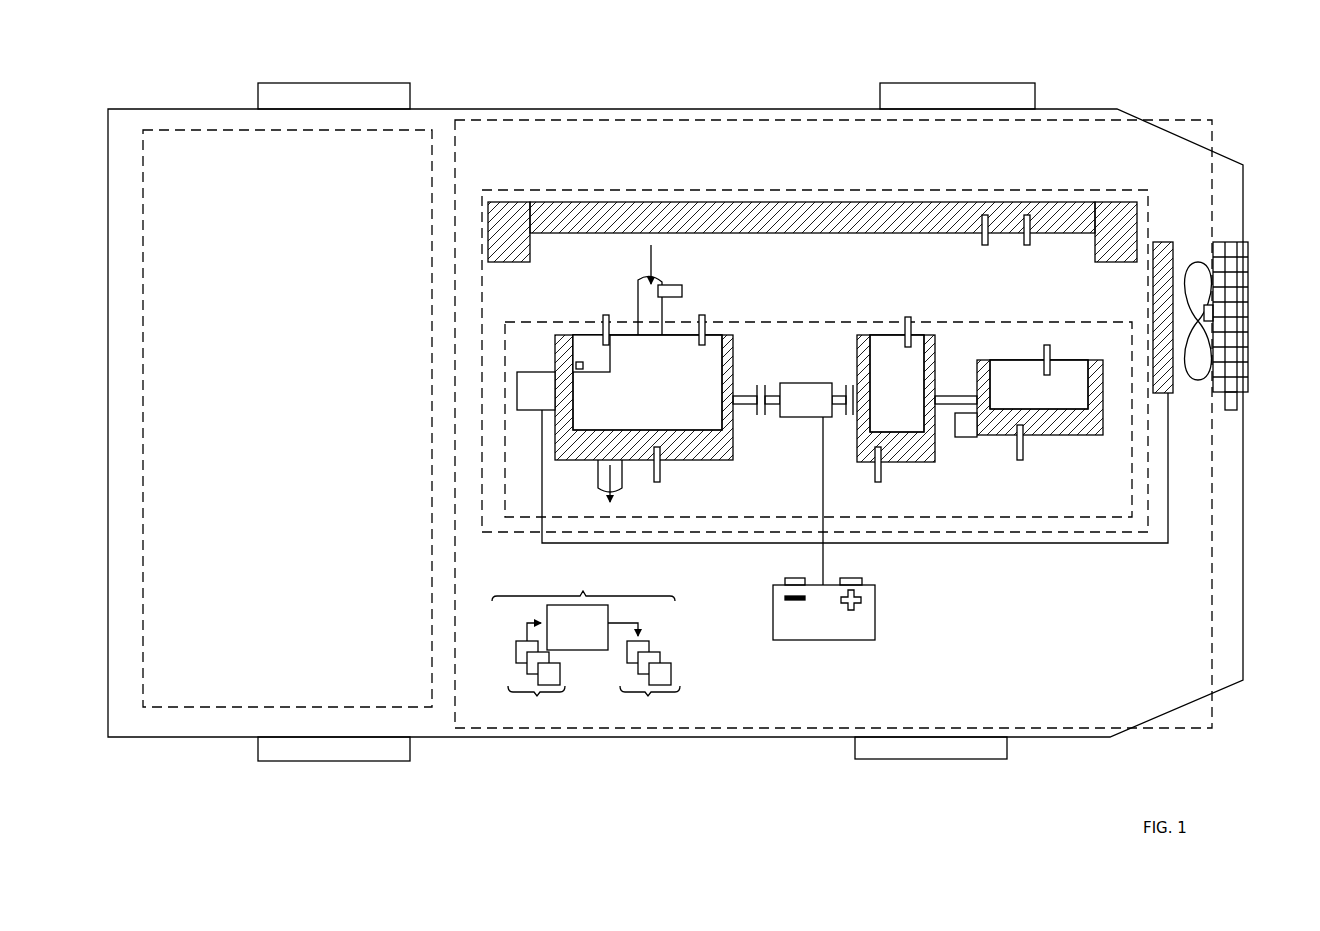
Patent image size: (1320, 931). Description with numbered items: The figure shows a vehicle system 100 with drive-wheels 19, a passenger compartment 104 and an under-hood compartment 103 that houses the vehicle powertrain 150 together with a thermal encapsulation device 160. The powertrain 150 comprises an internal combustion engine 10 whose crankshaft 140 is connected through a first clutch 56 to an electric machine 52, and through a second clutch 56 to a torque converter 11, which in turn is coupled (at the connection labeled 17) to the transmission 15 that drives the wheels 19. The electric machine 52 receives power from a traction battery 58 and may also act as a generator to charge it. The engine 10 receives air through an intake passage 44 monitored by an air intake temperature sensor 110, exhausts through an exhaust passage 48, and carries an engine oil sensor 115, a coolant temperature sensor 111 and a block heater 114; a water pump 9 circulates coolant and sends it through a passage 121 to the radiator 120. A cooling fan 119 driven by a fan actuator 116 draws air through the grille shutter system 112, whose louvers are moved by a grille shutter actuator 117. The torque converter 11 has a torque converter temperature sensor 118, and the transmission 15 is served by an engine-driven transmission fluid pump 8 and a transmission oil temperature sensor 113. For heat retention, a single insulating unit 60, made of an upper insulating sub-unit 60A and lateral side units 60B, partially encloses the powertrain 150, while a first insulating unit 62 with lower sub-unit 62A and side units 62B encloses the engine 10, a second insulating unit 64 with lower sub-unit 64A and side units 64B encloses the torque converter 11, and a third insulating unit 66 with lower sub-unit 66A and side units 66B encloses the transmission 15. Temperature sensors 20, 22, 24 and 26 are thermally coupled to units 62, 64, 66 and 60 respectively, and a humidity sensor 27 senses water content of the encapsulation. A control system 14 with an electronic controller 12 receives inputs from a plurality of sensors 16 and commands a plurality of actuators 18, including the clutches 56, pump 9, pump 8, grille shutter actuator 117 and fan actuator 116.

The vehicle system 100 is at (1262, 79).
The under-hood compartment 103 is at (1174, 120).
The passenger compartment 104 is at (287, 418).
The drive-wheels 19 is at (333, 83).
The thermal encapsulation device 160 is at (900, 190).
The vehicle powertrain 150 is at (766, 516).
The single insulating unit 60 is at (812, 217).
The upper insulating sub-unit 60A is at (640, 203).
The lateral side units 60B is at (513, 203).
The humidity sensor 27 is at (988, 244).
The temperature sensor 26 is at (1030, 244).
The radiator 120 is at (1158, 242).
The cooling fan 119 is at (1190, 268).
The grille shutter system 112 is at (1244, 278).
The cooling fan actuator 116 is at (1196, 372).
The grille shutter actuator 117 is at (1240, 402).
The passage 121 is at (985, 544).
The first insulating unit 62 is at (644, 397).
The lower insulating sub-unit 62A is at (726, 462).
The lateral side units 62B is at (560, 340).
The internal combustion engine 10 is at (647, 382).
The controller 12 is at (578, 492).
The block heater 114 is at (580, 368).
The water pump 9 is at (536, 391).
The temperature sensor 111 is at (600, 318).
The engine oil sensor 115 is at (702, 315).
The intake passage 44 is at (638, 298).
The air intake temperature sensor 110 is at (670, 285).
The temperature sensor 20 is at (660, 468).
The exhaust passage 48 is at (621, 487).
The crankshaft 140 is at (742, 396).
The clutch 56 is at (846, 385).
The electric machine 52 is at (794, 418).
The second insulating unit 64 is at (896, 398).
The lower insulating sub-unit 64A is at (940, 462).
The lateral side units 64B is at (870, 335).
The torque converter 11 is at (897, 383).
The torque converter temperature sensor 118 is at (905, 320).
The temperature sensor 22 is at (882, 470).
The output shaft 17 is at (937, 397).
The third insulating unit 66 is at (1040, 397).
The lower insulating sub-unit 66A is at (1095, 436).
The lateral side units 66B is at (977, 362).
The transmission 15 is at (1039, 384).
The engine-driven transmission fluid pump 8 is at (966, 425).
The temperature sensor 113 is at (1044, 352).
The temperature sensor 24 is at (1023, 455).
The traction battery 58 is at (818, 641).
The control system 14 is at (583, 588).
The sensors 16 is at (526, 671).
The actuators 18 is at (666, 671).